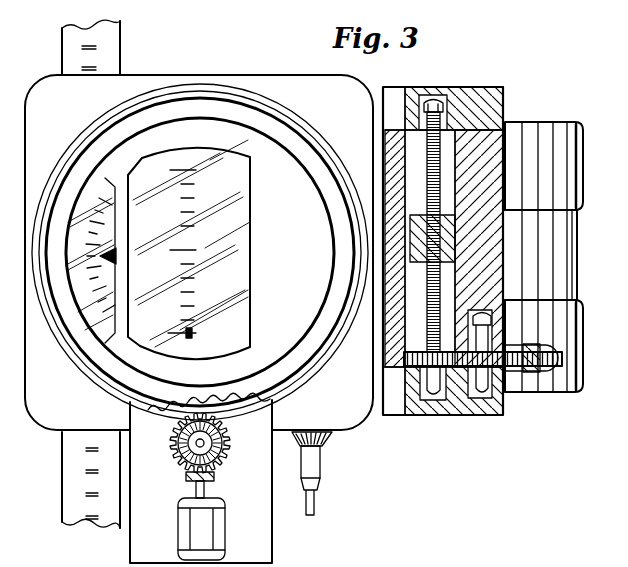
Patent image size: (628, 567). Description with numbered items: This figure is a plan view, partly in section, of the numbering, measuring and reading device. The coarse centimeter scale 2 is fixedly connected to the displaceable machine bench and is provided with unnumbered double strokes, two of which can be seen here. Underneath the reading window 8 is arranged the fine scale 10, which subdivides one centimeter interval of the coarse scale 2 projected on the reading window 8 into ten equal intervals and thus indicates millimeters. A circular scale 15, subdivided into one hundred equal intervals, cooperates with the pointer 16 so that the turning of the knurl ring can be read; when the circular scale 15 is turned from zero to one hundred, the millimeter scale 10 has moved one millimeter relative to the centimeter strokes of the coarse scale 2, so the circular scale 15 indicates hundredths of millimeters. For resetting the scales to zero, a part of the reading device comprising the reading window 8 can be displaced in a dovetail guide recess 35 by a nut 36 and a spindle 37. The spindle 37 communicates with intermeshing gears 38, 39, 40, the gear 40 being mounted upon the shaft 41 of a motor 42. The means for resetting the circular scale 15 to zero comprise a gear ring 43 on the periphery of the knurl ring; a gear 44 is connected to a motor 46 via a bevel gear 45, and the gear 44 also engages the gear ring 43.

The coarse centimeter scale 2 is at (62, 470).
The reading window 8 is at (275, 173).
The scale 10 is at (181, 246).
The circular scale 15 is at (64, 190).
The pointer 16 is at (118, 251).
The dovetail guide recess 35 is at (396, 405).
The nut 36 is at (410, 246).
The spindle 37 is at (426, 150).
The gear 38 is at (416, 402).
The gear 39 is at (463, 368).
The gear 40 is at (543, 378).
The shaft 41 is at (548, 352).
The motor 42 is at (532, 130).
The gear ring 43 is at (180, 408).
The gear 44 is at (231, 449).
The bevel gear 45 is at (216, 474).
The motor 46 is at (226, 535).